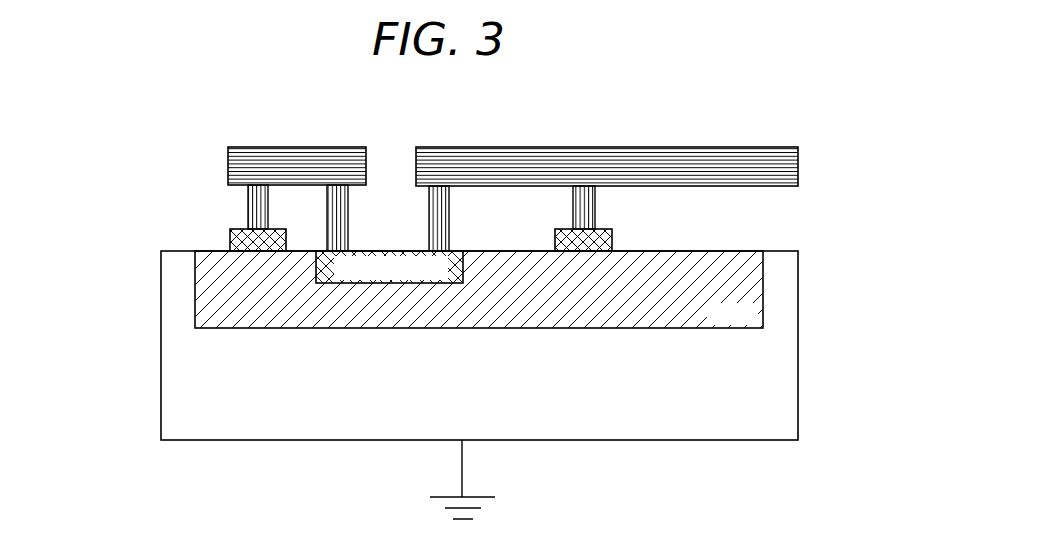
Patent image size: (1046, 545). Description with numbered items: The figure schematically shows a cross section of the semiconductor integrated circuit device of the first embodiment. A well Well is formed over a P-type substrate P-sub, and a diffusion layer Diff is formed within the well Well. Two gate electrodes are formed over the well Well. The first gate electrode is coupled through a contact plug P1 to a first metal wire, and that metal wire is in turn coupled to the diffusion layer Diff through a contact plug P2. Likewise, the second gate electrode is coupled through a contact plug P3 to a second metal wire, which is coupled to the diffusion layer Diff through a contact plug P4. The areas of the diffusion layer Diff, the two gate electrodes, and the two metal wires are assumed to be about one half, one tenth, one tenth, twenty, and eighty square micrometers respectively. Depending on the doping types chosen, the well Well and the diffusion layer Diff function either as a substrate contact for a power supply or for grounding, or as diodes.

The P-type substrate P-sub is at (479, 345).
The well Well is at (479, 289).
The diffusion layer Diff is at (389, 267).
The contact plug P1 is at (248, 206).
The contact plug P2 is at (344, 208).
The contact plug P3 is at (578, 207).
The contact plug P4 is at (446, 208).